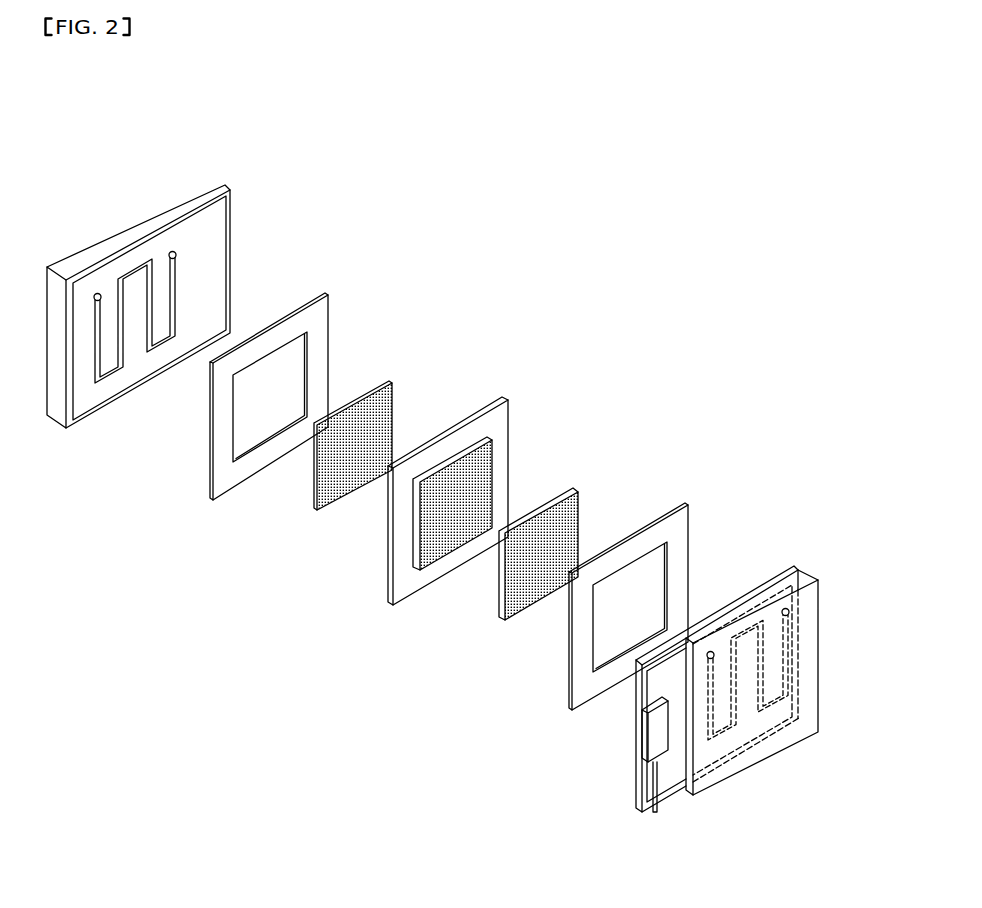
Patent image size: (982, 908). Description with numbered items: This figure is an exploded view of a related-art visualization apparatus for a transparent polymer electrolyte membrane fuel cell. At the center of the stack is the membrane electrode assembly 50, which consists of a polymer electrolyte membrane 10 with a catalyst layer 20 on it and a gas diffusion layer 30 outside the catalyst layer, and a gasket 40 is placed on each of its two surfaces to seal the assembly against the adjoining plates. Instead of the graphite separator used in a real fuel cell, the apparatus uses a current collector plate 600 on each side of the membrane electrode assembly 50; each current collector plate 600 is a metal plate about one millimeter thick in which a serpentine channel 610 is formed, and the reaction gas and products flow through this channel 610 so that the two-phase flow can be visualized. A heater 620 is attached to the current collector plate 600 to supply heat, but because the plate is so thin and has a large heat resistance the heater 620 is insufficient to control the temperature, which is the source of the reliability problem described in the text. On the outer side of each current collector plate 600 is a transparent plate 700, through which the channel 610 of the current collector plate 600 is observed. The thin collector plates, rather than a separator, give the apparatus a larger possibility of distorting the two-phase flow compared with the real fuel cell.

The polymer electrolyte membrane 10 is at (508, 398).
The catalyst layer 20 is at (490, 463).
The gas diffusion layer 30 is at (392, 383).
The gasket 40 is at (328, 297).
The membrane electrode assembly 50 is at (634, 450).
The current collector plate 600 is at (232, 200).
The channel 610 is at (173, 293).
The heater 620 is at (650, 735).
The transparent plate 700 is at (163, 200).